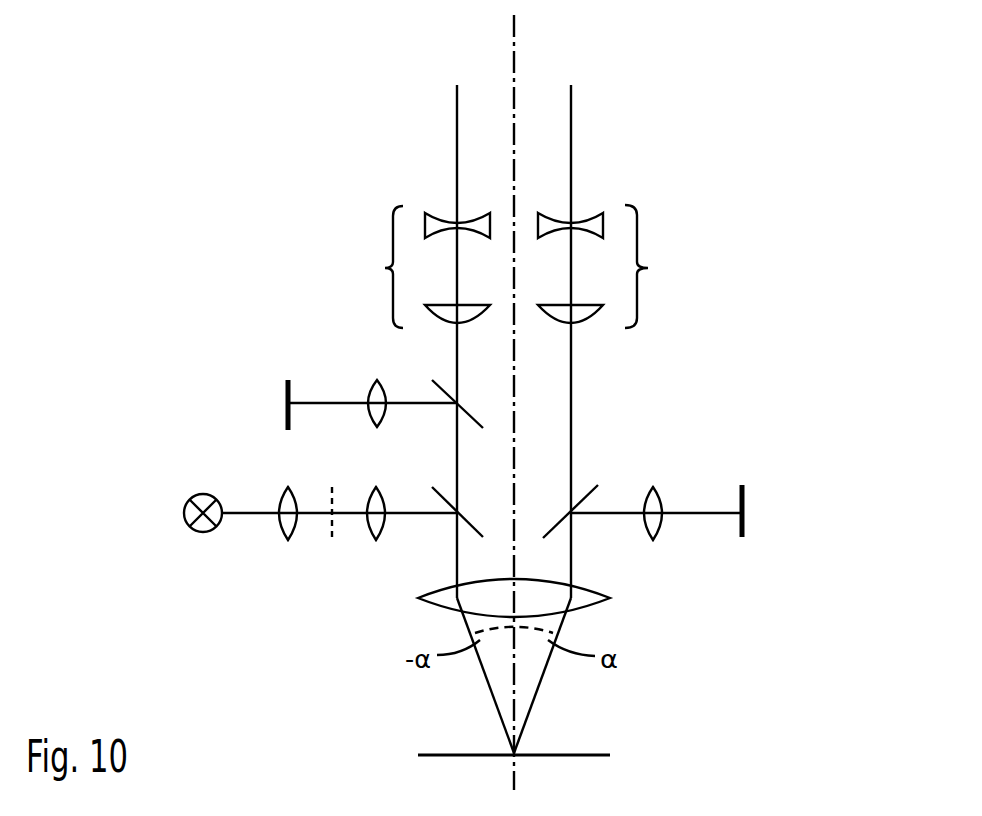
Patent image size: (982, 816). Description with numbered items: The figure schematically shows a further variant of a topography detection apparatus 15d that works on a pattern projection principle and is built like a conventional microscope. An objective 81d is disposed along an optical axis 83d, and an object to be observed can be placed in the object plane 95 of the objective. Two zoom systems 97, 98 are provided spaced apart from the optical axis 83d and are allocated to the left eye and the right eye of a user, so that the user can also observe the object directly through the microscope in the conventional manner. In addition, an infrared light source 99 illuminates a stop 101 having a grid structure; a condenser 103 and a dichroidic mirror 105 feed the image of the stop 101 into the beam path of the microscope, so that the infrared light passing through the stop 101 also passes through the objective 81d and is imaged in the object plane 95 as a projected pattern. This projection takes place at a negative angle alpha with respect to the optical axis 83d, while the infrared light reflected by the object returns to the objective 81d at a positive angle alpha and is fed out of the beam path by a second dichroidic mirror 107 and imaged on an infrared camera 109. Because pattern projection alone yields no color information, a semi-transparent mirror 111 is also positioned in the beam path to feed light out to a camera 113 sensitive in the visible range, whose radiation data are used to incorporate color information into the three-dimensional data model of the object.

The topography detection apparatus 15d is at (253, 193).
The optical axis 83d is at (517, 40).
The zoom system 97 is at (608, 266).
The zoom system 98 is at (421, 267).
The camera 113 is at (285, 393).
The semi-transparent mirror 111 is at (470, 422).
The infrared light source 99 is at (202, 532).
The stop 101 is at (332, 540).
The condenser 103 is at (376, 540).
The dichroidic mirror 105 is at (470, 537).
The dichroidic mirror 107 is at (557, 537).
The infrared camera 109 is at (745, 497).
The objective 81d is at (605, 600).
The object plane 95 is at (580, 753).